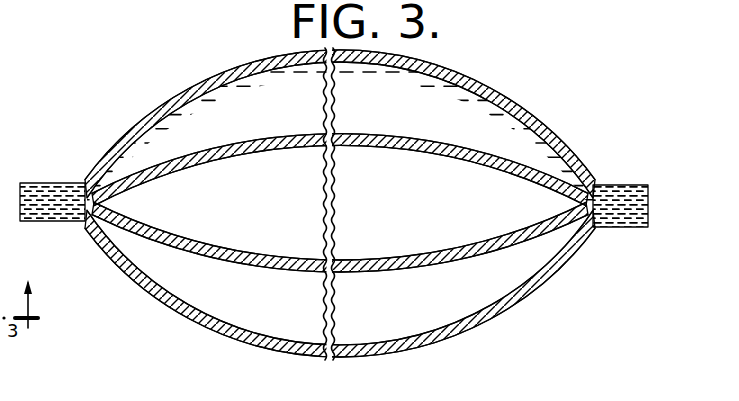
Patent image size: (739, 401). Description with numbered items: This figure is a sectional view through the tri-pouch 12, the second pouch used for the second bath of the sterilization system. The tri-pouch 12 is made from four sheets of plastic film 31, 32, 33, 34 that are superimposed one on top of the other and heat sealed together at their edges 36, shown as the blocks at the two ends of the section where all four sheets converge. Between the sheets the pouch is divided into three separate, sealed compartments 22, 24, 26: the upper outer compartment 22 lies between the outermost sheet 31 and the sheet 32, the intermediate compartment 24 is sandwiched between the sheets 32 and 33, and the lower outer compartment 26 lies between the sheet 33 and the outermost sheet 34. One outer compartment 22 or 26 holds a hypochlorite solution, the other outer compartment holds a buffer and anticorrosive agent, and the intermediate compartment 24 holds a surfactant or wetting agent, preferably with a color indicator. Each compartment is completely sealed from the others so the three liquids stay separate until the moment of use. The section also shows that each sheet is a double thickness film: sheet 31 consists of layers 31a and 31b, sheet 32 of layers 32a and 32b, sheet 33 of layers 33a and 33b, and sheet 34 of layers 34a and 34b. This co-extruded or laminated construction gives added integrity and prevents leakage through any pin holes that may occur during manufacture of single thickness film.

The second pouch 12 is at (4, 92).
The outer compartment 22 is at (481, 83).
The intermediate compartment 24 is at (504, 210).
The outer compartment 26 is at (504, 272).
The sheet of plastic film 31 is at (143, 107).
The double thickness film layer 31a is at (193, 82).
The double thickness film layer 31b is at (259, 66).
The sheet of plastic film 32 is at (522, 153).
The double thickness film layer 32a is at (372, 130).
The double thickness film layer 32b is at (388, 152).
The sheet of plastic film 33 is at (198, 262).
The double thickness film layer 33a is at (222, 250).
The double thickness film layer 33b is at (240, 268).
The sheet of plastic film 34 is at (482, 336).
The double thickness film layer 34a is at (451, 330).
The double thickness film layer 34b is at (437, 347).
The heat sealed edges 36 is at (45, 183).